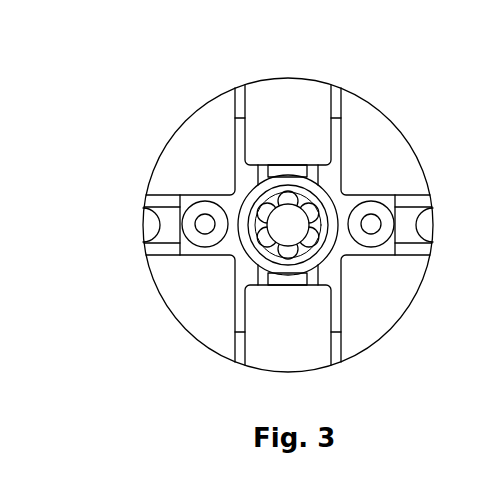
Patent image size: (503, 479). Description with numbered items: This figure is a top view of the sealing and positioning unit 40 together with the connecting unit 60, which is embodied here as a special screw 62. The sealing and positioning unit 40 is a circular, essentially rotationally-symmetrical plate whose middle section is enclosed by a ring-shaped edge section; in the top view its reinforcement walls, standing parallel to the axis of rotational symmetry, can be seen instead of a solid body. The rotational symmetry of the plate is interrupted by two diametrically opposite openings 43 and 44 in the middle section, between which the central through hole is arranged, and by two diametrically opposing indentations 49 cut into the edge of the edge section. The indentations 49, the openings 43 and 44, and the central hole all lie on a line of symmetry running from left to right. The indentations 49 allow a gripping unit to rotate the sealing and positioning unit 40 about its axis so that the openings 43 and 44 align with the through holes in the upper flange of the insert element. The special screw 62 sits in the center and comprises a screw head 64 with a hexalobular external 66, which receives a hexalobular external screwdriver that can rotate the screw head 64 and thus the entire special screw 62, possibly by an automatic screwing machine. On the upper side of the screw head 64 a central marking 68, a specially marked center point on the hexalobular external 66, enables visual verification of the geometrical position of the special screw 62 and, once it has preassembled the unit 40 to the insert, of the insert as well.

The sealing and positioning unit 40 is at (367, 70).
The opening 43 is at (374, 222).
The opening 44 is at (199, 224).
The indentation 49 is at (150, 212).
The connecting unit 60 is at (253, 249).
The special screw 62 is at (288, 225).
The screw head 64 is at (310, 255).
The hexalobular external 66 is at (287, 253).
The central marking 68 is at (288, 226).